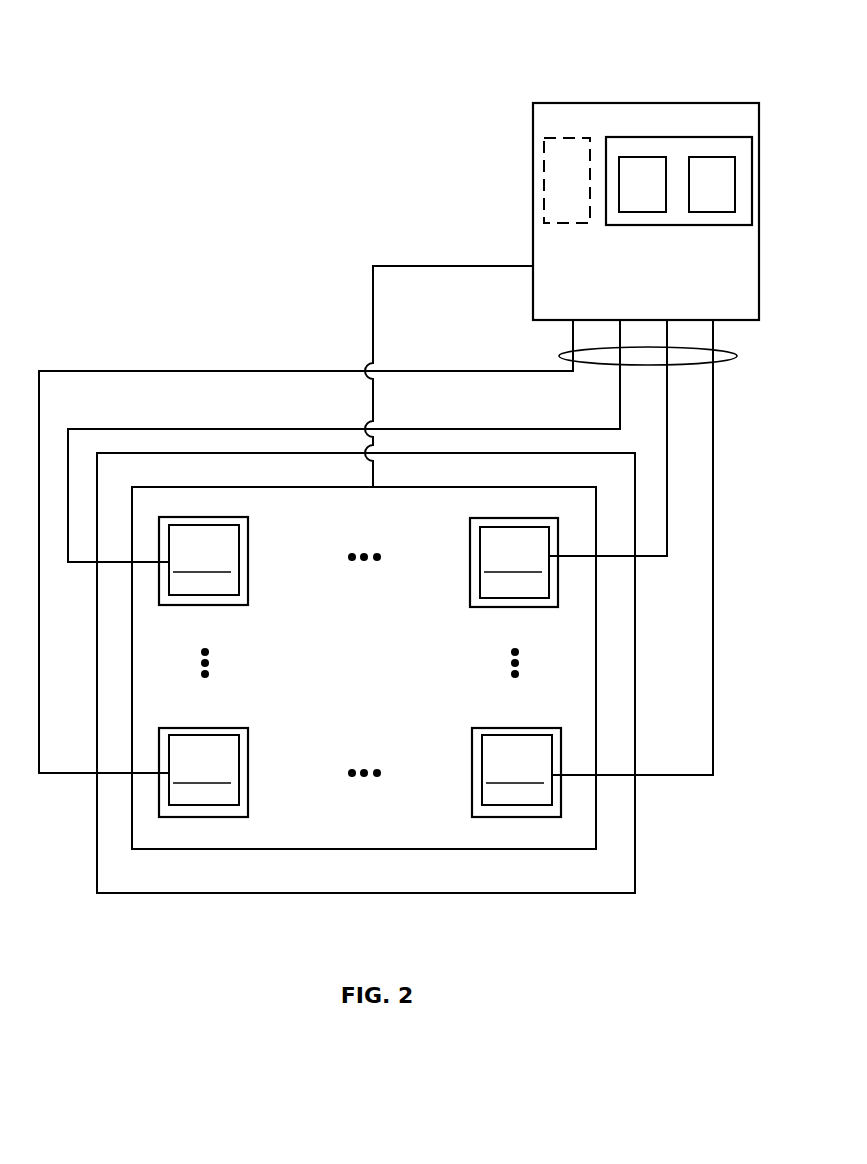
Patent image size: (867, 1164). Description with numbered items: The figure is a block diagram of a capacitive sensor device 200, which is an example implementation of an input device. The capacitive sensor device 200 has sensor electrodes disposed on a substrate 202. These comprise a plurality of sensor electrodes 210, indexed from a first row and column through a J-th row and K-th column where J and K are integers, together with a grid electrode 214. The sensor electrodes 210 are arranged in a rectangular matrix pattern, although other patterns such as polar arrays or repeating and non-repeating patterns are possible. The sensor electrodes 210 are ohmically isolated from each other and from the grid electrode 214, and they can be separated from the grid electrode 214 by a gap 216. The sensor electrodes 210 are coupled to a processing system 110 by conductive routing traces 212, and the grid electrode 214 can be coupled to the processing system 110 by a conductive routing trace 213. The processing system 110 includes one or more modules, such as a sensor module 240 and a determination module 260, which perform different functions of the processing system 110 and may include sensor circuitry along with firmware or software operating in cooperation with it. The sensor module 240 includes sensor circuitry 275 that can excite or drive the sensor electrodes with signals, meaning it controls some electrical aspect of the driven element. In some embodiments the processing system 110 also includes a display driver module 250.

The capacitive sensor device 200 is at (293, 270).
The processing system 110 is at (635, 295).
The display driver module 250 is at (555, 190).
The sensor circuitry 275 is at (625, 137).
The sensor module 240 is at (630, 193).
The determination module 260 is at (700, 193).
The conductive routing traces 212 is at (738, 354).
The conductive routing trace 213 is at (398, 266).
The substrate 202 is at (133, 893).
The grid electrode 214 is at (317, 833).
The sensor electrodes 210 is at (360, 667).
The gap 216 is at (248, 753).